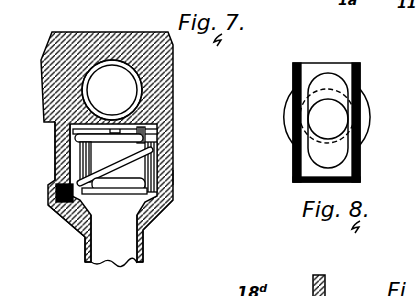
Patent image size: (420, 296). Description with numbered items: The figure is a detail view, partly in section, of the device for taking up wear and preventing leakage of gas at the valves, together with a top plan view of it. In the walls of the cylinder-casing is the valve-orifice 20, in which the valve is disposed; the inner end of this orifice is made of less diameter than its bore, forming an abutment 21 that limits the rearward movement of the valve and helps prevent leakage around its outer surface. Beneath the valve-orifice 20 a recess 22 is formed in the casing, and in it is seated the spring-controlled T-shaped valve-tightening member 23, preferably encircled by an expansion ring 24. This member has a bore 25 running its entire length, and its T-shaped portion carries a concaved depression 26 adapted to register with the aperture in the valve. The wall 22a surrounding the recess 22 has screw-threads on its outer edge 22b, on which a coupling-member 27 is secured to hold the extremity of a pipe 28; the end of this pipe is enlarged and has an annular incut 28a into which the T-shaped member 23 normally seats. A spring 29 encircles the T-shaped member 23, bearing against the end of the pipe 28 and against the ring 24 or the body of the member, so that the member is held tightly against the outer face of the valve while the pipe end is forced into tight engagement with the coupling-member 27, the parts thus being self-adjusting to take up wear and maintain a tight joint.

In FIG. 7, the valve-orifice 20 is at (113, 74).
In FIG. 7, the abutment 21 is at (92, 64).
In FIG. 7, the recess 22 is at (172, 146).
In FIG. 7, the wall 22a is at (229, 160).
In FIG. 7, the outer edge 22b is at (234, 190).
In FIG. 7, the T-shaped valve-tightening member 23 is at (70, 166).
In FIG. 7, the expansion ring 24 is at (164, 130).
In FIG. 8, the bore 25 is at (330, 116).
In FIG. 8, the concaved depression 26 is at (333, 88).
In FIG. 7, the coupling-member 27 is at (180, 212).
In FIG. 7, the pipe 28 is at (142, 244).
In FIG. 7, the annular incut 28a is at (68, 216).
In FIG. 7, the spring 29 is at (50, 196).